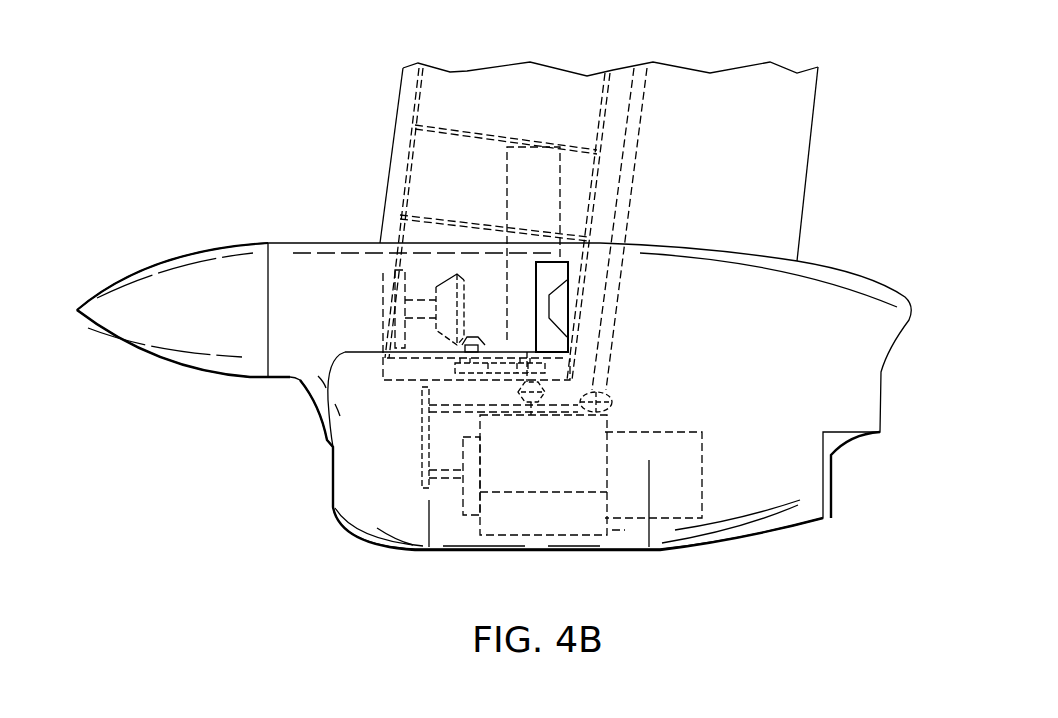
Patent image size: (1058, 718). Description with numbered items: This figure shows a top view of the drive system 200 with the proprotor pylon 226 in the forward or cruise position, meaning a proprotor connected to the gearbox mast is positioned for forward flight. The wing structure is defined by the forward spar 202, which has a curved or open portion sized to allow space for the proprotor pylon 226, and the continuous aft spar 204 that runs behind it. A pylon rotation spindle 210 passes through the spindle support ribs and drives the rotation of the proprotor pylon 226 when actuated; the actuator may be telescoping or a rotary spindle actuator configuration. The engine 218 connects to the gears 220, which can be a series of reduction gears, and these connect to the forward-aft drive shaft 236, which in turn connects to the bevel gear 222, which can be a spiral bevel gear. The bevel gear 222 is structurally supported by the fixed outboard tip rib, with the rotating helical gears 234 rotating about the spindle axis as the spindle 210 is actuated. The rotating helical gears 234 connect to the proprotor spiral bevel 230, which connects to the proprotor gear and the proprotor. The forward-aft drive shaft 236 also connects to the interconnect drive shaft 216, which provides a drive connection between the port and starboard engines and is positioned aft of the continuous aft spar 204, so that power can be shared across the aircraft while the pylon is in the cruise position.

The drive system 200 is at (220, 72).
The forward spar 202 is at (420, 97).
The continuous aft spar 204 is at (602, 103).
The pylon rotation spindle 210 is at (507, 187).
The interconnect drive shaft 216 is at (620, 287).
The engine 218 is at (537, 538).
The gears 220 is at (400, 444).
The bevel gear 222 is at (532, 413).
The proprotor pylon 226 is at (183, 229).
The proprotor spiral bevel 230 is at (440, 277).
The rotating helical gears 234 is at (527, 350).
The forward-aft drive shaft 236 is at (422, 410).